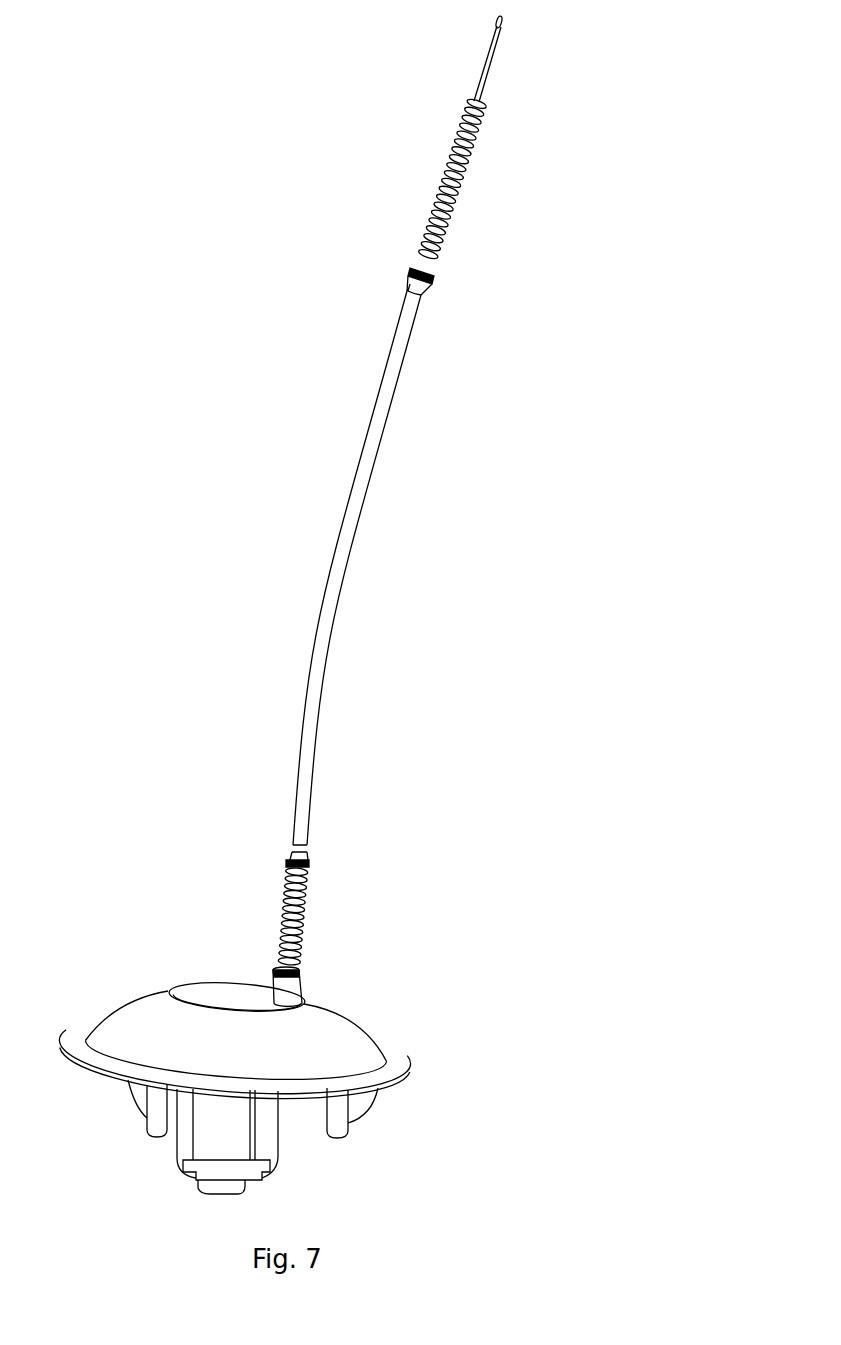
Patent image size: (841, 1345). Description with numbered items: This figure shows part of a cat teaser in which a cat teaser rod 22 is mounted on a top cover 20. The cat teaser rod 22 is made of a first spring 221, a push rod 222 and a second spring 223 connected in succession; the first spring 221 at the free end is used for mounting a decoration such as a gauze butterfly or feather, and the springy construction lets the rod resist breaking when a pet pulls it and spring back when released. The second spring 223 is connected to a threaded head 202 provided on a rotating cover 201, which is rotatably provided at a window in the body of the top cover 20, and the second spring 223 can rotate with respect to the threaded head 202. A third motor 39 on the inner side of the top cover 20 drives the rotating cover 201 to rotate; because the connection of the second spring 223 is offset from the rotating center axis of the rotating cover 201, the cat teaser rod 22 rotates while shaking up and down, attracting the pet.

The top cover 20 is at (342, 1025).
The rotating cover 201 is at (227, 992).
The threaded head 202 is at (297, 983).
The cat teaser rod 22 is at (338, 505).
The first spring 221 is at (432, 216).
The push rod 222 is at (385, 377).
The second spring 223 is at (300, 933).
The third motor 39 is at (230, 1150).